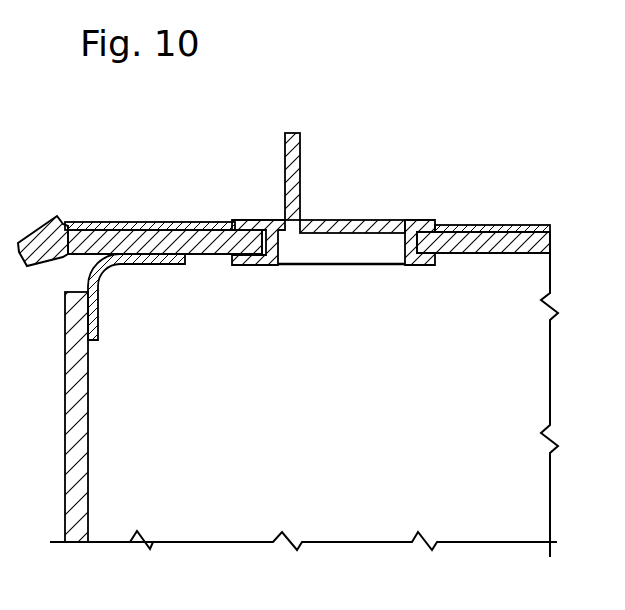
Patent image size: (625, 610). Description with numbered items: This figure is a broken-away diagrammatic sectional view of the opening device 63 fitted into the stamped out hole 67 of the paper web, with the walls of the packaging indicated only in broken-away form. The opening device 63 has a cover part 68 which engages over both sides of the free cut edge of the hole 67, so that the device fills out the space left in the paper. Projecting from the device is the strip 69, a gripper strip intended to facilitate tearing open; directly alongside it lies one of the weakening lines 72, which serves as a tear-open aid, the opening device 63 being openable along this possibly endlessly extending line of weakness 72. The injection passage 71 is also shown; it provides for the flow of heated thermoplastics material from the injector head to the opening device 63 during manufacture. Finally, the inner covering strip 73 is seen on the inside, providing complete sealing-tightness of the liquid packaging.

The opening device 63 is at (325, 175).
The stamped out hole 67 is at (250, 227).
The cover part 68 is at (371, 232).
The strip 69 is at (291, 135).
The injection passage 71 is at (140, 228).
The weakening lines 72 is at (278, 220).
The inner covering strip 73 is at (100, 268).